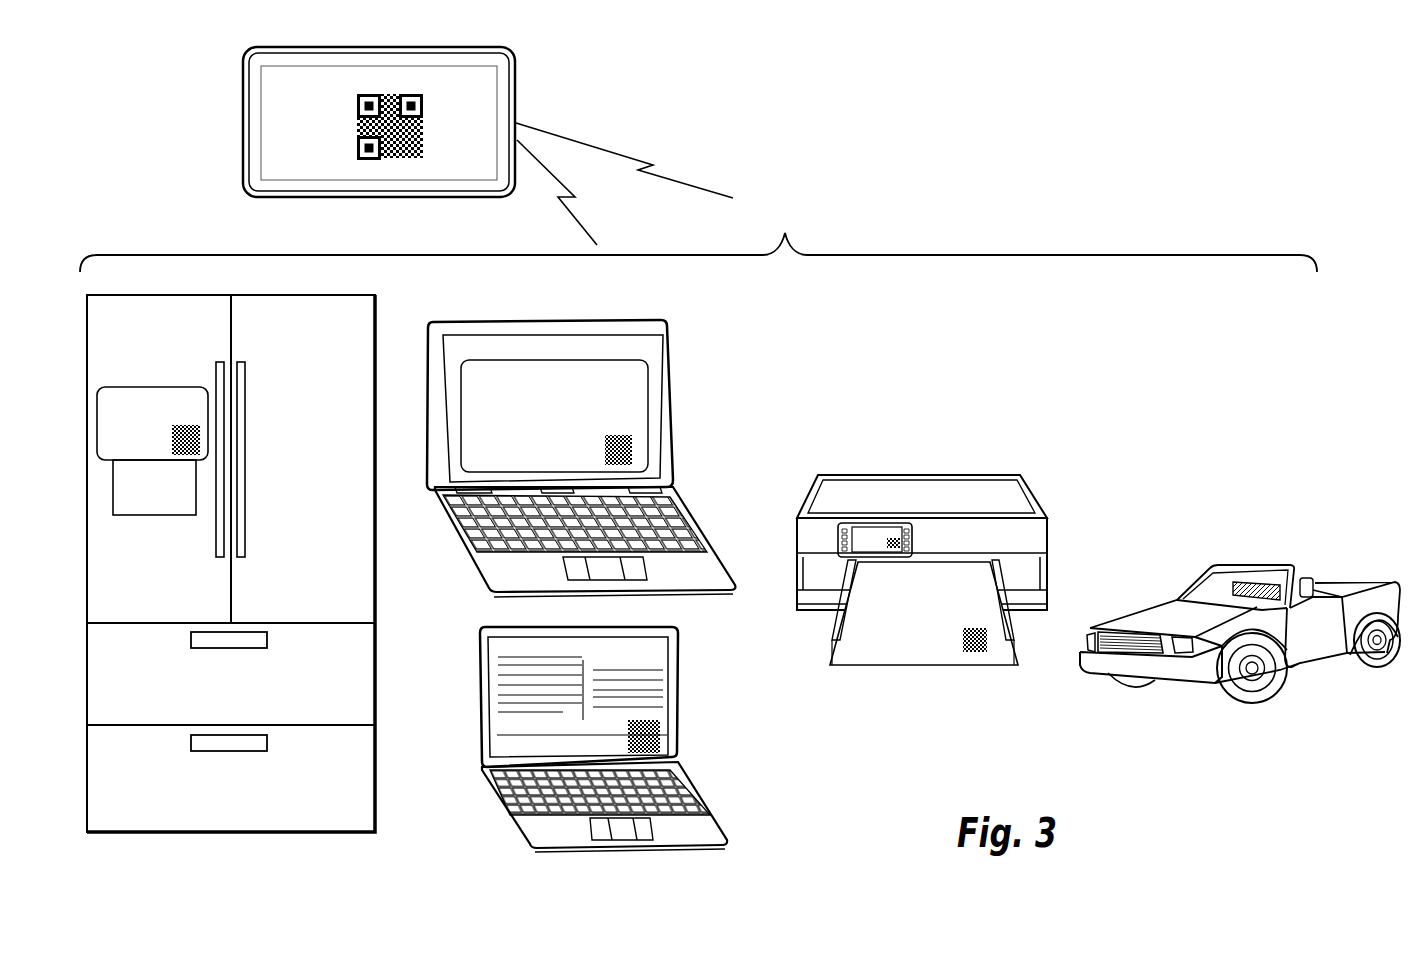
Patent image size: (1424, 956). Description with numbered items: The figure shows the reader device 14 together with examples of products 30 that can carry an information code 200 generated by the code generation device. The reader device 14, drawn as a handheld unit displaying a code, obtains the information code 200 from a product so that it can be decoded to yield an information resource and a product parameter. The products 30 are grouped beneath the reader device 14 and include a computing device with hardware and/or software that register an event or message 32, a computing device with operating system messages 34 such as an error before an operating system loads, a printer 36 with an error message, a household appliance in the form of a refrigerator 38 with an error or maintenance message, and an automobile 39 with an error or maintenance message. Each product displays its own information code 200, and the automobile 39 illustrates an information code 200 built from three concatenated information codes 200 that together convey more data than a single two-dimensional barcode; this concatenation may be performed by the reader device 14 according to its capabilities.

The reader device 14 is at (513, 75).
The products 30 is at (698, 237).
The computing device with hardware and/or software that register an event or message 32 is at (677, 332).
The computing device with operating system messages 34 is at (478, 688).
The printer 36 is at (880, 475).
The refrigerator 38 is at (375, 320).
The automobile 39 is at (1177, 600).
The information code 200 is at (200, 437).